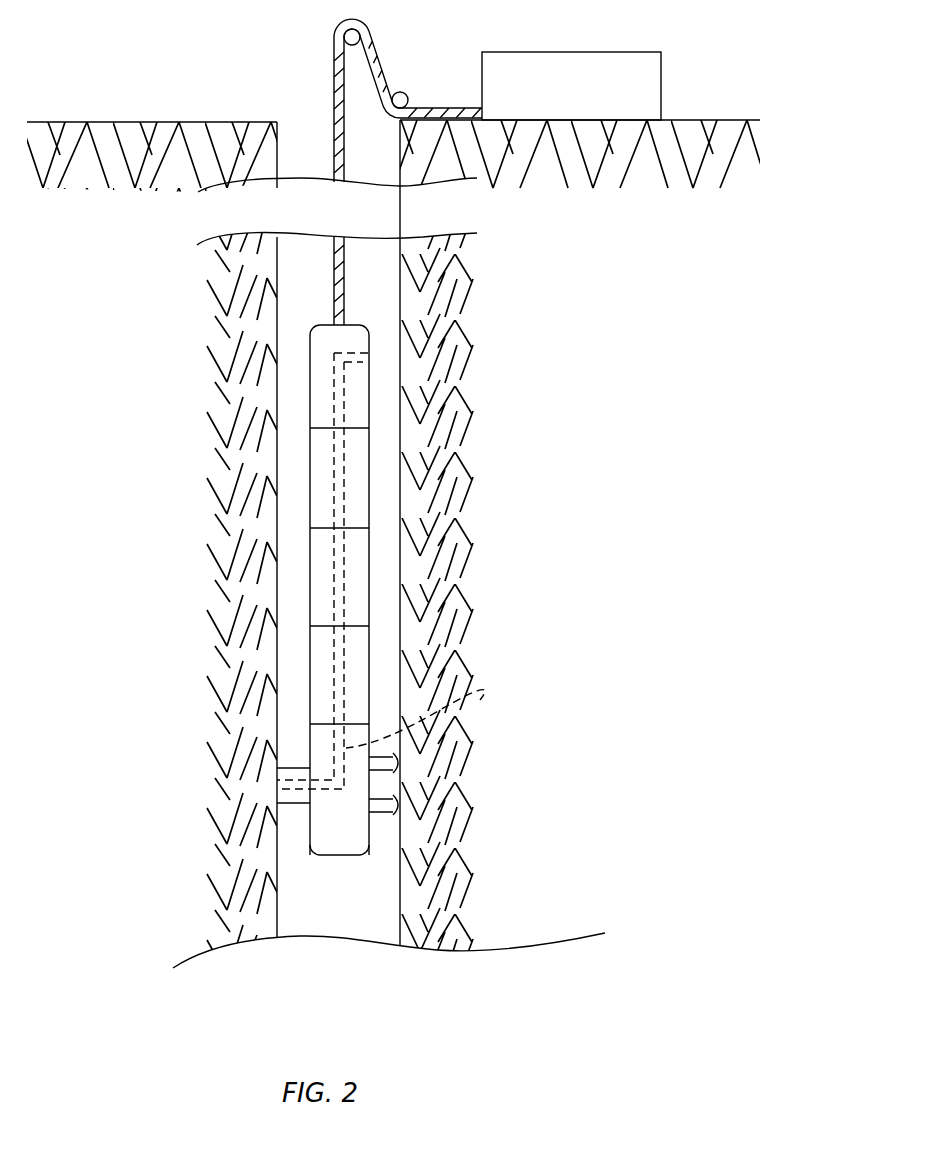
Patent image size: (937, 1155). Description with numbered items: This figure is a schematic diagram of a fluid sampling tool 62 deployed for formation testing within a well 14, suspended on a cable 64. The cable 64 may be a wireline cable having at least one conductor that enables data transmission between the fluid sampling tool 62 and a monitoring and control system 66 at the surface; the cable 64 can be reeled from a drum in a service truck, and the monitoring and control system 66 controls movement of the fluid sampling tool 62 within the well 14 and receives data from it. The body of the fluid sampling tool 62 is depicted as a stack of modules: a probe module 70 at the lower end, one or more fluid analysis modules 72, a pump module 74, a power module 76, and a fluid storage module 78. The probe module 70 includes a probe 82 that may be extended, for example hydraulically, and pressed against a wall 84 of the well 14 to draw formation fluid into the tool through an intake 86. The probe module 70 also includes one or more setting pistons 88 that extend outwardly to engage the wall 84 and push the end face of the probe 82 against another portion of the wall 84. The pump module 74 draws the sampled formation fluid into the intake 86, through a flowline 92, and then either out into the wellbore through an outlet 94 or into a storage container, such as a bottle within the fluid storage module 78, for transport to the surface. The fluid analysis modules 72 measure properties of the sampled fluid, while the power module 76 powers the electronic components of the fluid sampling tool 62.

The well 14 is at (310, 143).
The fluid sampling tool 62 is at (313, 326).
The cable 64 is at (333, 50).
The monitoring and control system 66 is at (662, 93).
The probe module 70 is at (310, 832).
The fluid analysis module 72 is at (322, 682).
The pump module 74 is at (322, 557).
The power module 76 is at (322, 460).
The fluid storage module 78 is at (322, 393).
The probe 82 is at (292, 766).
The wall 84 is at (288, 803).
The intake 86 is at (272, 791).
The setting pistons 88 is at (378, 771).
The flowline 92 is at (432, 718).
The outlet 94 is at (376, 357).